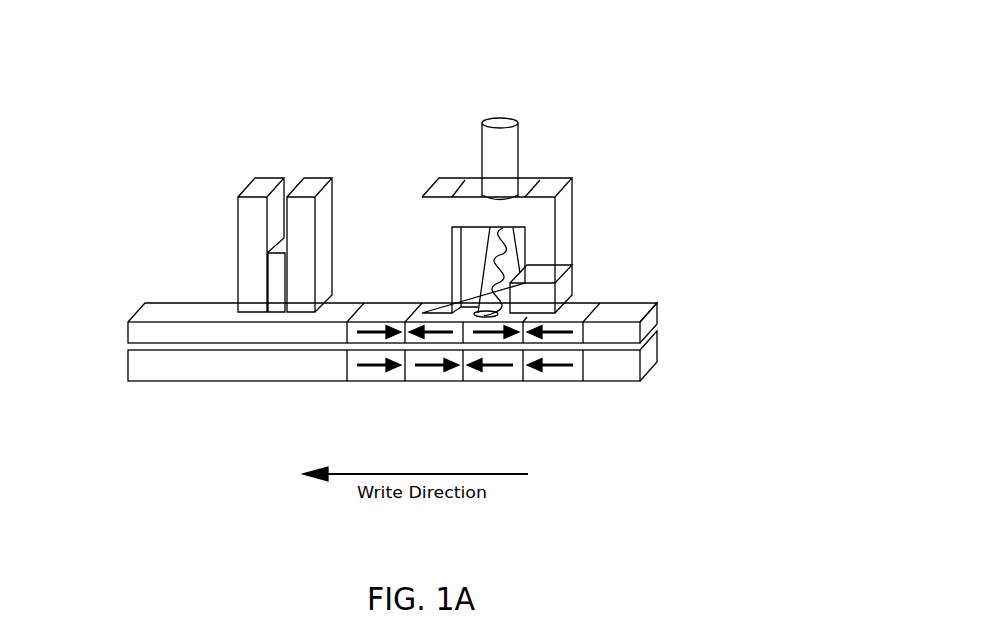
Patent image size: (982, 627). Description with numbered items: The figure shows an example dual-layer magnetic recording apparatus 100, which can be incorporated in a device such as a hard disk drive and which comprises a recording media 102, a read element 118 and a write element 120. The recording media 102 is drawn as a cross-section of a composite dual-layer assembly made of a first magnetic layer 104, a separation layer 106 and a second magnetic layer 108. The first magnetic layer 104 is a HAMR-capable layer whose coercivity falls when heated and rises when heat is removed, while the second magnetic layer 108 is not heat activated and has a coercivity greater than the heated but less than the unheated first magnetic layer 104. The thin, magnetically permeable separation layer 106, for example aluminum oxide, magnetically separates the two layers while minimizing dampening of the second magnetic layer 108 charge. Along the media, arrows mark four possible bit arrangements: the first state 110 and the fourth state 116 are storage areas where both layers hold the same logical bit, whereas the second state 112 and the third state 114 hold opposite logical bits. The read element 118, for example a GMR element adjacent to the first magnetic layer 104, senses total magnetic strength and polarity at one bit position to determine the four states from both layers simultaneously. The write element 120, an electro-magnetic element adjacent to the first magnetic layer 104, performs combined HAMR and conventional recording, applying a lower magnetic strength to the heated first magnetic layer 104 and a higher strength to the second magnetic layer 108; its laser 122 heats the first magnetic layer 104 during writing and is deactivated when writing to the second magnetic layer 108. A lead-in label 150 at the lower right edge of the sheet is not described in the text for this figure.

The dual-layer magnetic recording apparatus 100 is at (823, 61).
The recording media 102 is at (127, 388).
The magnetic layer_1 104 is at (672, 286).
The separation layer 106 is at (670, 332).
The magnetic layer_2 108 is at (670, 378).
The state_1 110 is at (376, 393).
The state_2 112 is at (446, 393).
The state_3 114 is at (516, 393).
The state_4 116 is at (580, 393).
The read element 118 is at (321, 162).
The write element 120 is at (582, 261).
The laser 122 is at (529, 118).
The recording system (second embodiment) 150 is at (837, 626).